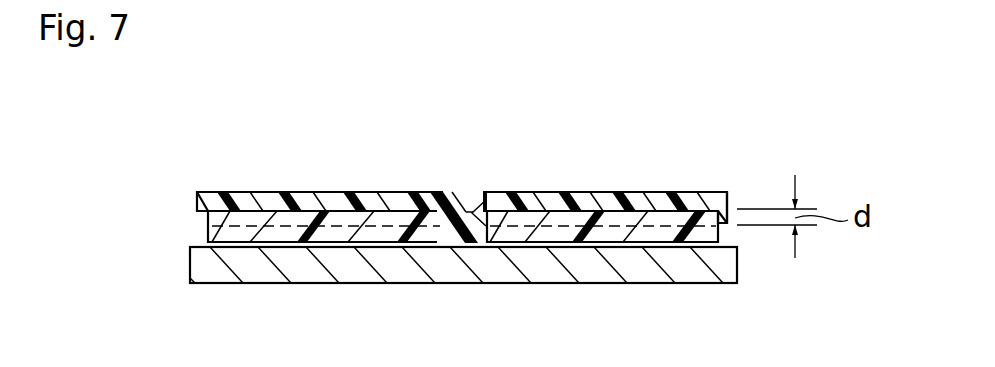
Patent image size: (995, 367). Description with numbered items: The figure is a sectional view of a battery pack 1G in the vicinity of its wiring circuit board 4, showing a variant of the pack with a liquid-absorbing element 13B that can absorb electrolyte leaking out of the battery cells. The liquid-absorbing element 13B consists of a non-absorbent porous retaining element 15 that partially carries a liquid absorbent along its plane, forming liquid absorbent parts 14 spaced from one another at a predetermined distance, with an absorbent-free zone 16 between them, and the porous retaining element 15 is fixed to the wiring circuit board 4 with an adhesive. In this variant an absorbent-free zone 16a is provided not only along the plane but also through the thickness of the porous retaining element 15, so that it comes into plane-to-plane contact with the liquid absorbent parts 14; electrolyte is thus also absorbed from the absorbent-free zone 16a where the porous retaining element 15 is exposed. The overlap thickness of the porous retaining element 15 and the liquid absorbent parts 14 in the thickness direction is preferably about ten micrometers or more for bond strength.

The battery pack 1G is at (124, 128).
The wiring circuit board 4 is at (671, 283).
The liquid-absorbing element 13B is at (257, 188).
The liquid absorbent parts 14 is at (208, 238).
The porous retaining element 15 is at (715, 192).
The absorbent-free zone 16 is at (462, 195).
The absorbent-free zone 16a is at (565, 192).